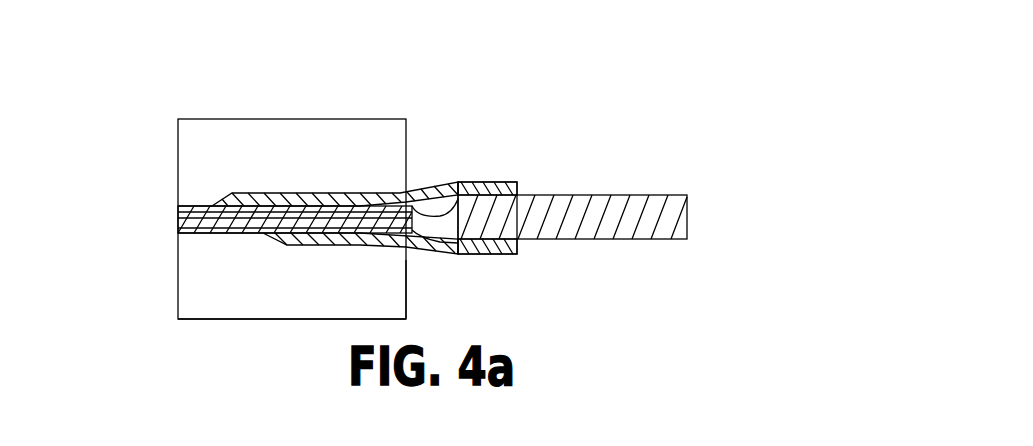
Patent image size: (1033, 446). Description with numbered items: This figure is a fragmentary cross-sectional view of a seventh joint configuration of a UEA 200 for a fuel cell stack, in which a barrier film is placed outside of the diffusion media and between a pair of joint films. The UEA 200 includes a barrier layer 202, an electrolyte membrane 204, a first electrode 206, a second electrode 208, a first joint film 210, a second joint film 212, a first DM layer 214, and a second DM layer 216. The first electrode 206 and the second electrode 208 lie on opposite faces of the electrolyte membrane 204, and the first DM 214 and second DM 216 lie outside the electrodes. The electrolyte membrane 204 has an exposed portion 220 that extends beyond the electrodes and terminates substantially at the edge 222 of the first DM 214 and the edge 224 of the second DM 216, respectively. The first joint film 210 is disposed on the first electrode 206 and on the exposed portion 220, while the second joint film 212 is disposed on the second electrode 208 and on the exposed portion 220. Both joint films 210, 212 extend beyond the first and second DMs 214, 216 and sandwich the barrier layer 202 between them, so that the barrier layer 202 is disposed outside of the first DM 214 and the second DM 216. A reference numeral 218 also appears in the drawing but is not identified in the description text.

The UEA 200 is at (676, 109).
The barrier layer 202 is at (640, 240).
The electrolyte membrane 204 is at (178, 223).
The first electrode 206 is at (178, 200).
The second electrode 208 is at (178, 250).
The first joint film 210 is at (493, 182).
The second joint film 212 is at (497, 254).
The first DM layer 214 is at (233, 119).
The second DM layer 216 is at (216, 320).
The ferrule holder 218 is at (460, 182).
The exposed portion 220 is at (385, 241).
The edge of the first DM 222 is at (407, 157).
The edge of the second DM 224 is at (407, 289).